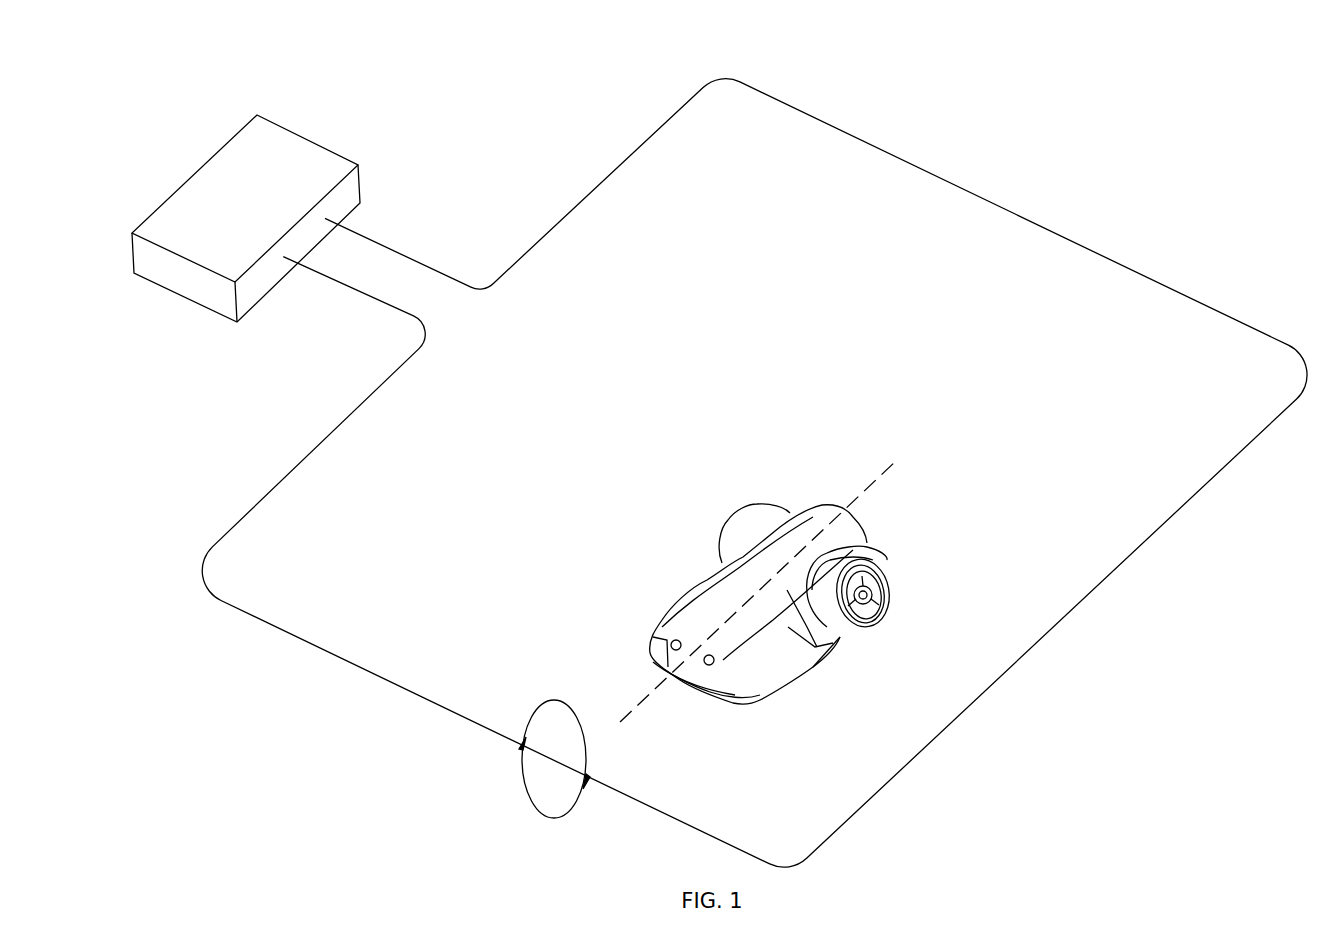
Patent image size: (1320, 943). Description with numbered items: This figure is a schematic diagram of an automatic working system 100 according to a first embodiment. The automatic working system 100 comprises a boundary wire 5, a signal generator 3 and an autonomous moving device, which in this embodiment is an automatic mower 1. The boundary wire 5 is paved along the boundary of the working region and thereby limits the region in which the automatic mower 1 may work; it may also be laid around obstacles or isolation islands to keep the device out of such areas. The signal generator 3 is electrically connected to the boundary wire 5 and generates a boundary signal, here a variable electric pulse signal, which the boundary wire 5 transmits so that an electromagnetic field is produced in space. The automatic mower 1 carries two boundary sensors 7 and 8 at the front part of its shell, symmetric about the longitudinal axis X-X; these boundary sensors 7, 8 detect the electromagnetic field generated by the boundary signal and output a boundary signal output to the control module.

The automatic working system 100 is at (1117, 118).
The automatic mower 1 is at (862, 517).
The signal generator 3 is at (288, 158).
The boundary wire 5 is at (858, 135).
The boundary sensor 7 is at (709, 665).
The boundary sensor 8 is at (676, 652).